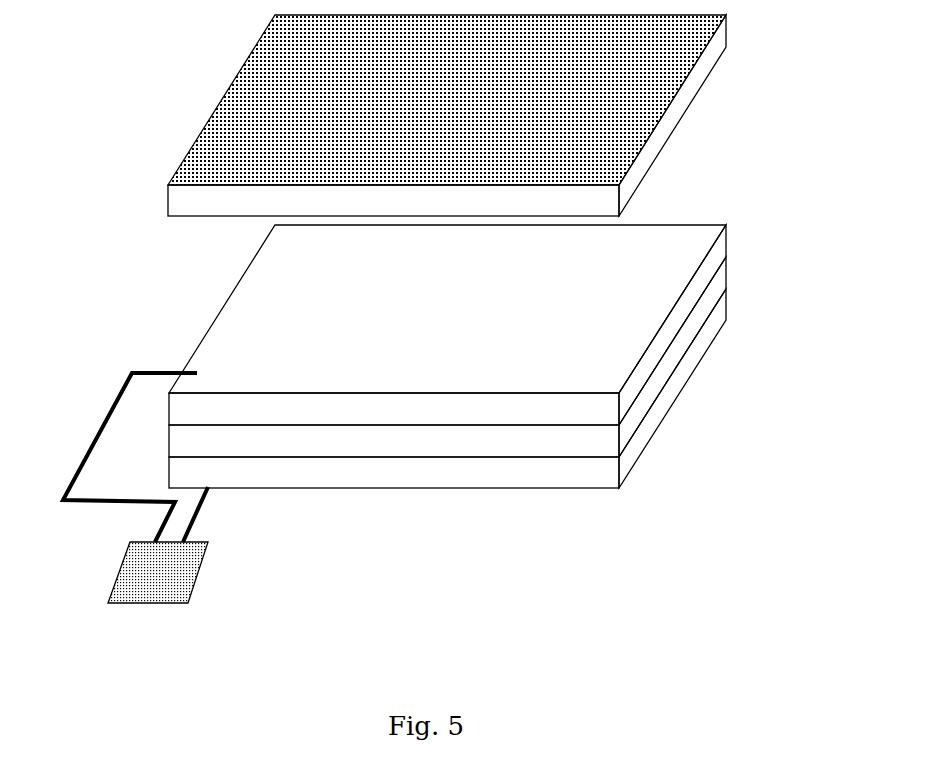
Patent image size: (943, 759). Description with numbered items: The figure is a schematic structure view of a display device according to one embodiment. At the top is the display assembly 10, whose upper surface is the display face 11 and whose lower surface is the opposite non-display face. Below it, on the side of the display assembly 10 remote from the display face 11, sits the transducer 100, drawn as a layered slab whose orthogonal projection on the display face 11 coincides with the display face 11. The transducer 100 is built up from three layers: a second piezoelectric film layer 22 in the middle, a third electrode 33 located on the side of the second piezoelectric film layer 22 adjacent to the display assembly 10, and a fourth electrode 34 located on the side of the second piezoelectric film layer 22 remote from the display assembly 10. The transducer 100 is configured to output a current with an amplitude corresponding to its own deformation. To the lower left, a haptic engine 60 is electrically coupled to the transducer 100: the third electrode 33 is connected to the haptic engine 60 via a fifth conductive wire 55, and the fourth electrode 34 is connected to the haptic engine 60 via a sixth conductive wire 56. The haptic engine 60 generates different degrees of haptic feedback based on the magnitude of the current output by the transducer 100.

The display assembly 10 is at (458, 115).
The display face 11 is at (232, 120).
The transducer 100 is at (499, 356).
The third electrode 33 is at (658, 272).
The second piezoelectric film layer 22 is at (686, 331).
The fourth electrode 34 is at (790, 297).
The fifth conductive wire 55 is at (108, 413).
The sixth conductive wire 56 is at (202, 500).
The haptic engine 60 is at (170, 567).